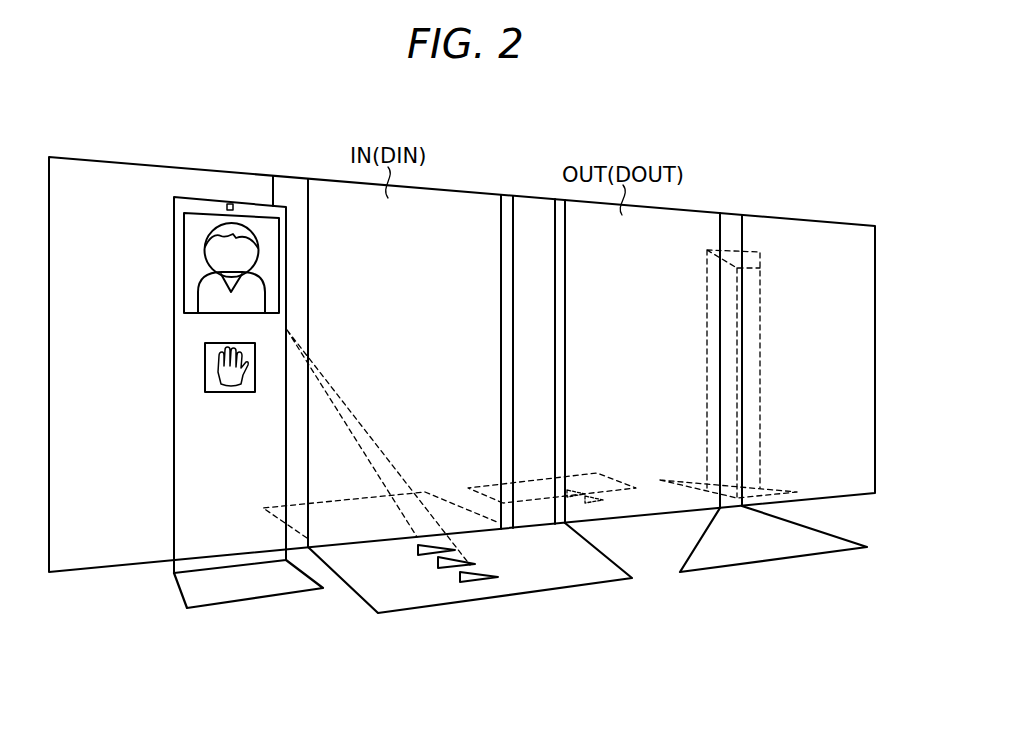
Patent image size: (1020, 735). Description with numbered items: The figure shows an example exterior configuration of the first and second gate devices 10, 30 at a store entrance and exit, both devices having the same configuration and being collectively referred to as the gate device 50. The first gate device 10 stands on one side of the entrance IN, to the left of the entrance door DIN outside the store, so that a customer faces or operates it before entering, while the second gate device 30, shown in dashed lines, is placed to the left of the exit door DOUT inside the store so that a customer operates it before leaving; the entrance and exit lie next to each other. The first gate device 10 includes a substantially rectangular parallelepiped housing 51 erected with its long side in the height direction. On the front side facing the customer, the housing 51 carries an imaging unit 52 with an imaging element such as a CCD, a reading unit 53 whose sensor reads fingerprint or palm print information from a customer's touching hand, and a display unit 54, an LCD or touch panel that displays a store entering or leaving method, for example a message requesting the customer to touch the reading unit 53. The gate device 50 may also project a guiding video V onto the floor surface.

The first gate device 10 is at (225, 351).
The second gate device 30 is at (753, 252).
The gate device 50 is at (469, 351).
The housing 51 is at (173, 227).
The imaging unit 52 is at (229, 207).
The reading unit 53 is at (212, 366).
The display unit 54 is at (257, 223).